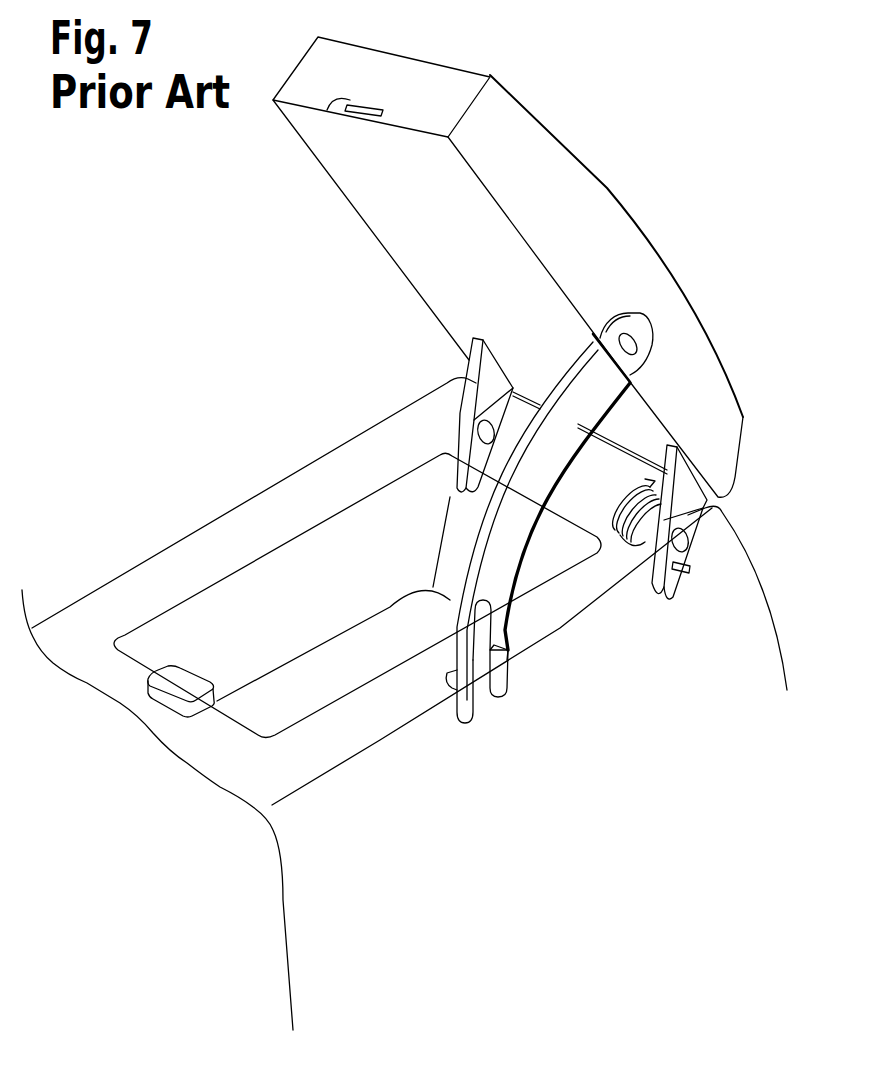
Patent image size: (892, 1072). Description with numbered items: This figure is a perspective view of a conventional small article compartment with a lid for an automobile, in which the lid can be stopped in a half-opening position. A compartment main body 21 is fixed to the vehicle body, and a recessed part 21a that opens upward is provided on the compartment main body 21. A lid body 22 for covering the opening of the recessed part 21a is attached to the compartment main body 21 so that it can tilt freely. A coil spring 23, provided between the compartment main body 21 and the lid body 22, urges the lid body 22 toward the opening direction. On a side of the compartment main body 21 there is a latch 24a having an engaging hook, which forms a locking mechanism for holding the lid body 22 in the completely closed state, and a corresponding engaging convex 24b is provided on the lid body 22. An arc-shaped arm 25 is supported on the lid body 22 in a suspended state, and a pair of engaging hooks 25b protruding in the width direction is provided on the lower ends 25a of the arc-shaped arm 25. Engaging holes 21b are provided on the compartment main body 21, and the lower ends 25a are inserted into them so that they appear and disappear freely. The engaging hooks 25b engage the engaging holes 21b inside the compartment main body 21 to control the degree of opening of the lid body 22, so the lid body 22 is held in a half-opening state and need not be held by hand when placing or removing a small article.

The compartment main body 21 is at (168, 562).
The recessed part 21a is at (342, 597).
The engaging holes 21b is at (455, 640).
The lid body 22 is at (592, 196).
The coil spring 23 is at (624, 542).
The latch 24a is at (227, 640).
The engaging convex 24b is at (333, 107).
The arc-shaped arm 25 is at (568, 387).
The lower ends 25a is at (503, 700).
The engaging hooks 25b is at (507, 657).